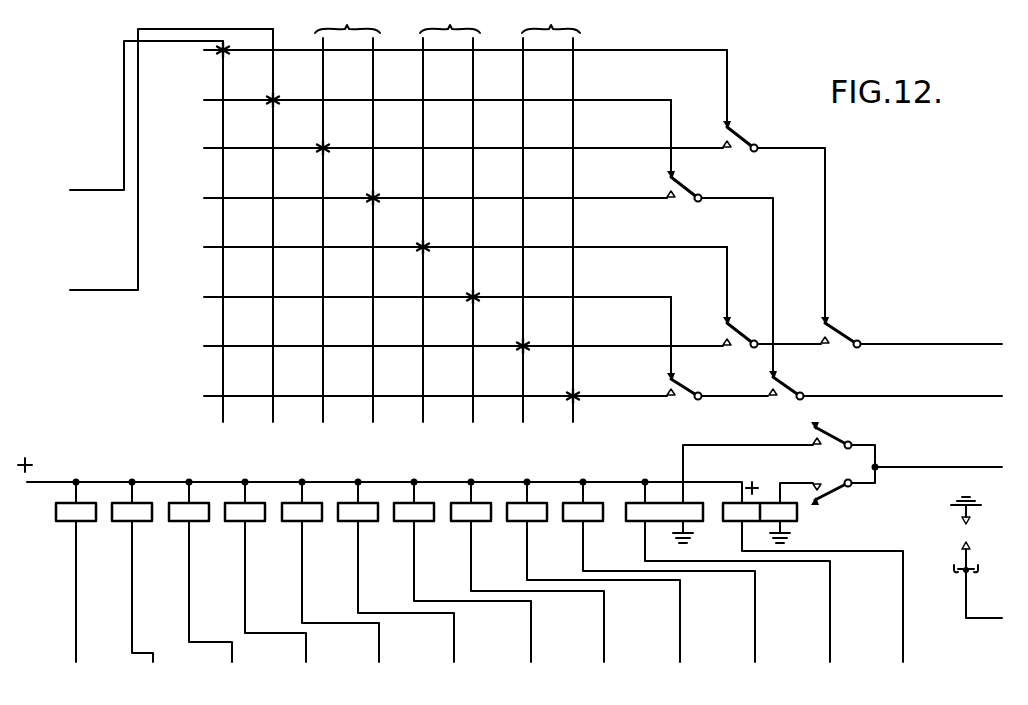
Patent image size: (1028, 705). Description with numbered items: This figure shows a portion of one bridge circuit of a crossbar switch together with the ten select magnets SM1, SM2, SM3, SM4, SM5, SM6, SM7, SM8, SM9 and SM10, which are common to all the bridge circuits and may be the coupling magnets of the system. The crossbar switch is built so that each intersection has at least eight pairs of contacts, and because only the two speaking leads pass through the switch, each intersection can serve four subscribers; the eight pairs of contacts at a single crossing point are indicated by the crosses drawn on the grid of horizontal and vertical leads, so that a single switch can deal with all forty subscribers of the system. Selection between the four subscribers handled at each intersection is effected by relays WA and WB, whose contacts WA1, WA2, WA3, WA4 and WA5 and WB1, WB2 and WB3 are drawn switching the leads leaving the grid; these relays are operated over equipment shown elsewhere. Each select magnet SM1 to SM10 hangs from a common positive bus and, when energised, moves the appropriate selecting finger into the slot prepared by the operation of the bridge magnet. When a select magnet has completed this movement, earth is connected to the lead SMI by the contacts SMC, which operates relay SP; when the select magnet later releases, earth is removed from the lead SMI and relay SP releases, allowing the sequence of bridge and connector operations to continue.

The relay WA contact WA1 is at (906, 443).
The relay WA contact WA2 is at (774, 186).
The relay WA contact WA3 is at (720, 238).
The relay WA contact WA4 is at (772, 297).
The relay WA contact WA5 is at (645, 473).
The relay WB contact WB1 is at (827, 491).
The relay WB contact WB2 is at (911, 331).
The relay WB contact WB3 is at (753, 468).
The select magnet SM1 is at (60, 571).
The select magnet SM2 is at (122, 571).
The select magnet SM3 is at (190, 571).
The select magnet SM4 is at (255, 571).
The select magnet SM5 is at (320, 571).
The select magnet SM6 is at (385, 571).
The select magnet SM7 is at (452, 571).
The select magnet SM8 is at (517, 571).
The select magnet SM9 is at (583, 571).
The select magnet SM10 is at (645, 571).
The select magnet contacts SMC is at (950, 521).
The select magnet lead SMI is at (976, 593).